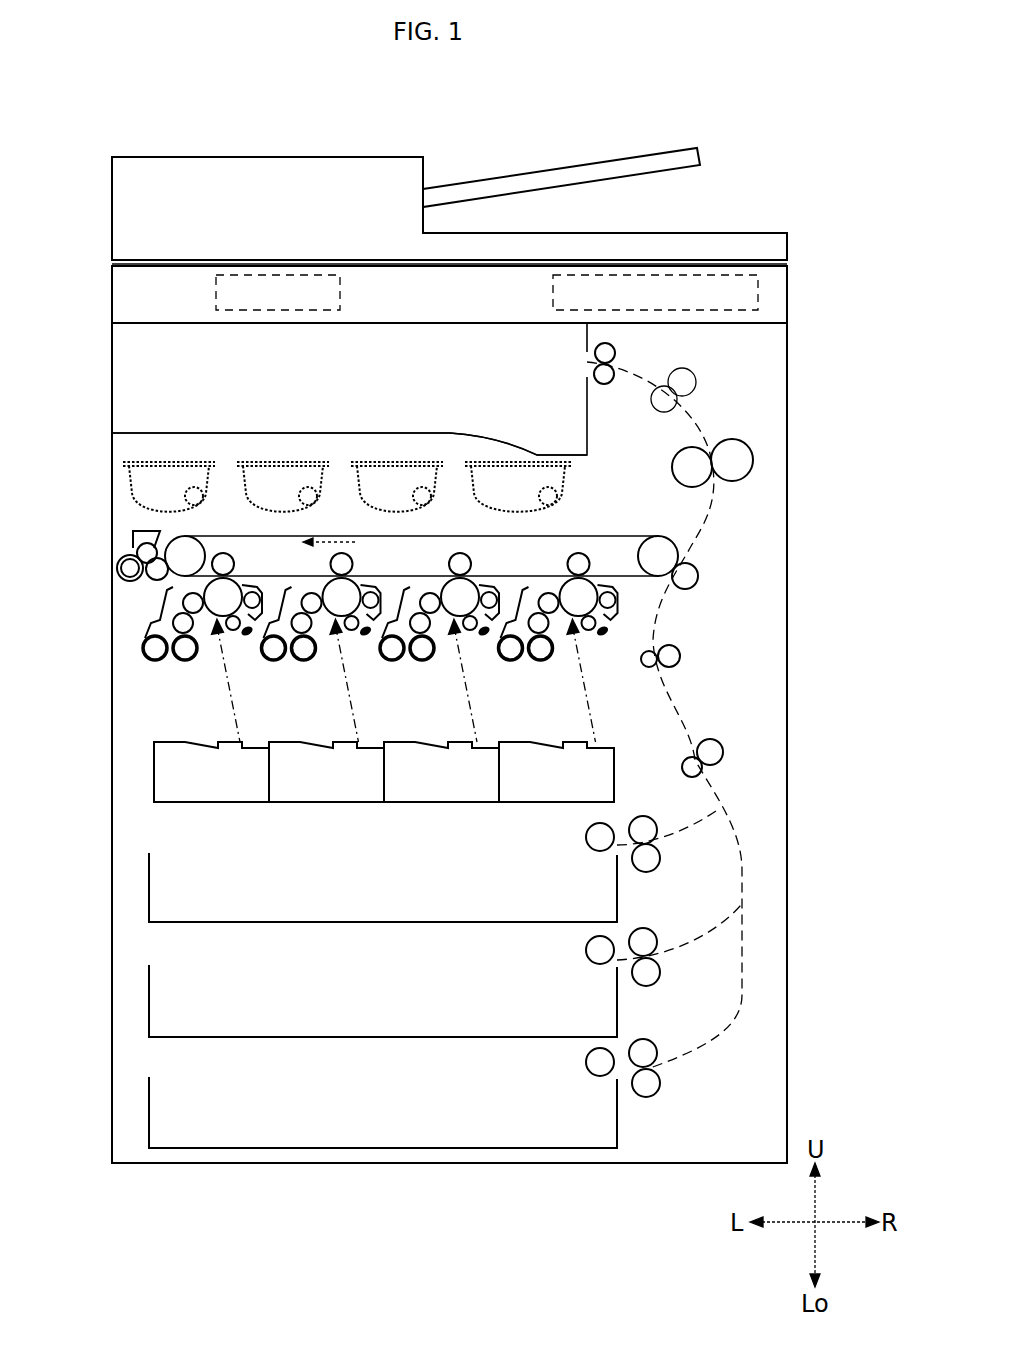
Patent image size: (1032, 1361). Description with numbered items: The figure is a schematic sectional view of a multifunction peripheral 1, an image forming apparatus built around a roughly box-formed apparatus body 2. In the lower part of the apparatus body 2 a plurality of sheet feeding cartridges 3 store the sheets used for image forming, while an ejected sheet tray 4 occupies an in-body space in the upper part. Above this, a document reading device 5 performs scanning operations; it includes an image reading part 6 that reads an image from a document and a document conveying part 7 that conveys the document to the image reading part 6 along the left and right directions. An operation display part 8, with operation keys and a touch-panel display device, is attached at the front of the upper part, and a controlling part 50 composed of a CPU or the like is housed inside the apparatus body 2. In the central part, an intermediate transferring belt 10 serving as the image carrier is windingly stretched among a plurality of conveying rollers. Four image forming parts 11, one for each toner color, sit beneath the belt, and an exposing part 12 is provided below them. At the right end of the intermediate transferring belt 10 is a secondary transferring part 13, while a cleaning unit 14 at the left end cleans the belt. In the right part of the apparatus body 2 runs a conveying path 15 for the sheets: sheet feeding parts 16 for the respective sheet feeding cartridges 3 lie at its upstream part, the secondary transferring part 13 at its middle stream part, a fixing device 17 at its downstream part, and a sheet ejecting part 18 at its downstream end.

The multifunction peripheral 1 is at (118, 103).
The apparatus body 2 is at (112, 500).
The sheet feeding cartridges 3 is at (149, 882).
The ejected sheet tray 4 is at (246, 433).
The document reading device 5 is at (702, 136).
The image reading part 6 is at (136, 264).
The document conveying part 7 is at (259, 157).
The operation display part 8 is at (760, 298).
The controlling part 50 is at (330, 308).
The intermediate transferring belt 10 is at (589, 537).
The image forming parts 11 is at (380, 647).
The exposing part 12 is at (143, 790).
The secondary transferring part 13 is at (704, 582).
The cleaning unit 14 is at (128, 553).
The conveying path 15 is at (660, 612).
The sheet feeding parts 16 is at (662, 852).
The fixing device 17 is at (722, 483).
The sheet ejecting part 18 is at (618, 357).